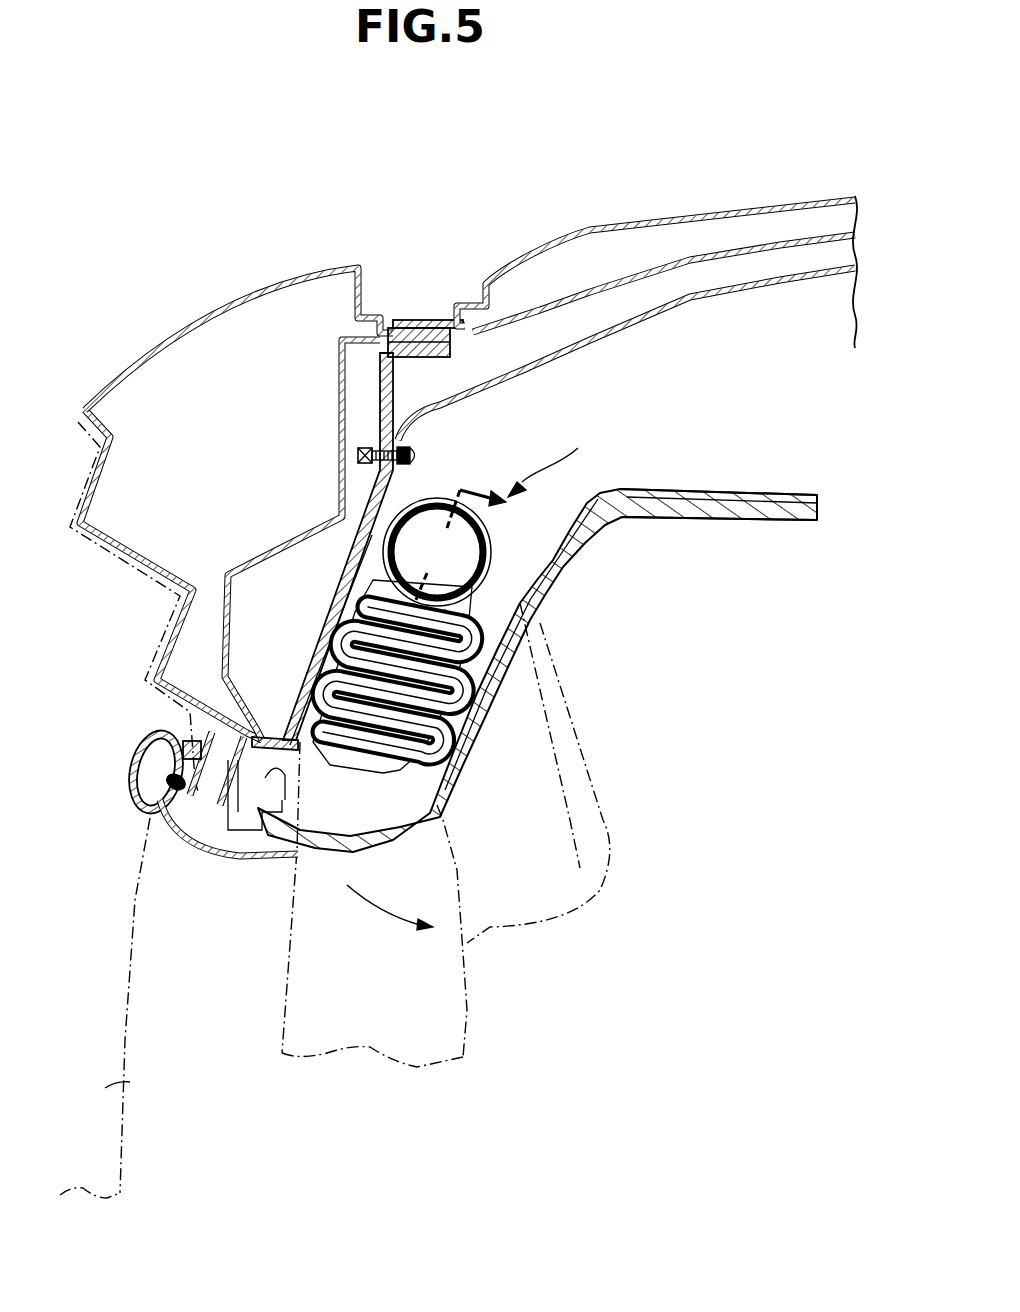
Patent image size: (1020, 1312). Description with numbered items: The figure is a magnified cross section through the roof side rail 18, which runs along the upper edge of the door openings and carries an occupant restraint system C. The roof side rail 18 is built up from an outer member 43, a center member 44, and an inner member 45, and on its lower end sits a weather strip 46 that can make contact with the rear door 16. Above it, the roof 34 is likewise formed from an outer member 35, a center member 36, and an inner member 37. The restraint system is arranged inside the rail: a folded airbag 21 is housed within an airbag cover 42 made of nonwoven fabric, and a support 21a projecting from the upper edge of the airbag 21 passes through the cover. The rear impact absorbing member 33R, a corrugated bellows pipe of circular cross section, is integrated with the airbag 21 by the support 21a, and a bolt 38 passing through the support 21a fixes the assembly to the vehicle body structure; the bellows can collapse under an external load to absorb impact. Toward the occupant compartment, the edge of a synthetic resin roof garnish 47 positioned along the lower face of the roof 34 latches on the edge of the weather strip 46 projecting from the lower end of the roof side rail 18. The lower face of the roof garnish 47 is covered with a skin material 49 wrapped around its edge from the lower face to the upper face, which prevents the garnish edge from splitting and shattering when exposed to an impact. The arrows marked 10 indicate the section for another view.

The roof side rail 18 is at (231, 465).
The outer member 43 is at (178, 337).
The center member 44 is at (273, 550).
The inner member 45 is at (320, 663).
The bolt 38 is at (412, 446).
The roof 34 is at (627, 270).
The outer member 35 is at (648, 222).
The center member 36 is at (615, 283).
The inner member 37 is at (737, 290).
The support 21a is at (443, 521).
The impact absorbing member 33R is at (413, 520).
The heat flow 10 is at (482, 568).
The occupant restraint system C is at (552, 457).
The airbag cover 42 is at (407, 773).
The airbag 21 is at (452, 720).
The roof garnish 47 is at (713, 520).
The skin material 49 is at (383, 853).
The weather strip 46 is at (230, 853).
The rear door 16 is at (130, 1083).